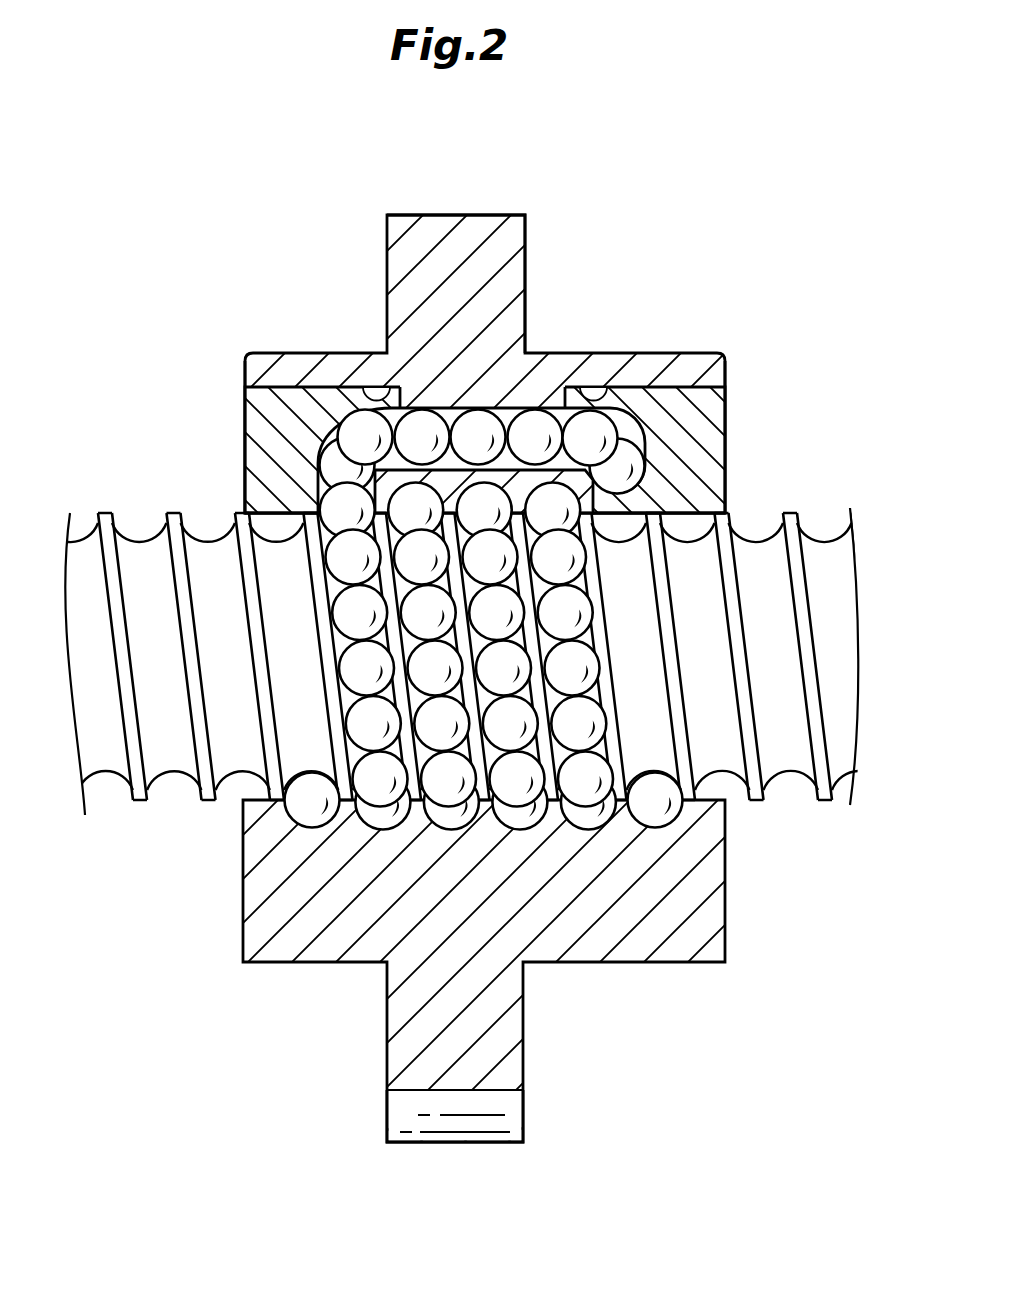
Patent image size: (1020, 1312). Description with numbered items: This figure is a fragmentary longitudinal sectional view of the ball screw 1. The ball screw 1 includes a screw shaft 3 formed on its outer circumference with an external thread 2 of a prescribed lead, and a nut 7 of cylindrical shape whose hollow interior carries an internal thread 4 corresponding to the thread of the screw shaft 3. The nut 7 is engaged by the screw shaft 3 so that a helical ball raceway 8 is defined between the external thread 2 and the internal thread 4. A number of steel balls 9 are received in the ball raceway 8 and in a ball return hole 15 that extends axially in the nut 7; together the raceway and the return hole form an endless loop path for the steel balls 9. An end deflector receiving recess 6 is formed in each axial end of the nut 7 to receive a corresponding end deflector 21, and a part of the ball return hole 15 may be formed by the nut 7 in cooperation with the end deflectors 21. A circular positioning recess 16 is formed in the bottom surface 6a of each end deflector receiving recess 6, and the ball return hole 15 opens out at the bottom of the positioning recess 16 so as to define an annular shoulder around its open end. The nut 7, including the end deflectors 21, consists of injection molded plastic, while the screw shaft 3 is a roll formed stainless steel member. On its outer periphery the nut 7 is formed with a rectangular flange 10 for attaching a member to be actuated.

The ball screw 1 is at (186, 216).
The external thread 2 is at (168, 775).
The screw shaft 3 is at (140, 798).
The internal thread 4 is at (243, 853).
The end deflector receiving recess 6 is at (287, 387).
The bottom surface 6a is at (368, 496).
The nut 7 is at (625, 354).
The helical ball raceway 8 is at (600, 748).
The steel balls 9 is at (368, 790).
The rectangular flange 10 is at (513, 1067).
The ball return hole 15 is at (472, 420).
The circular positioning recess 16 is at (367, 397).
The end deflector 21 is at (243, 397).